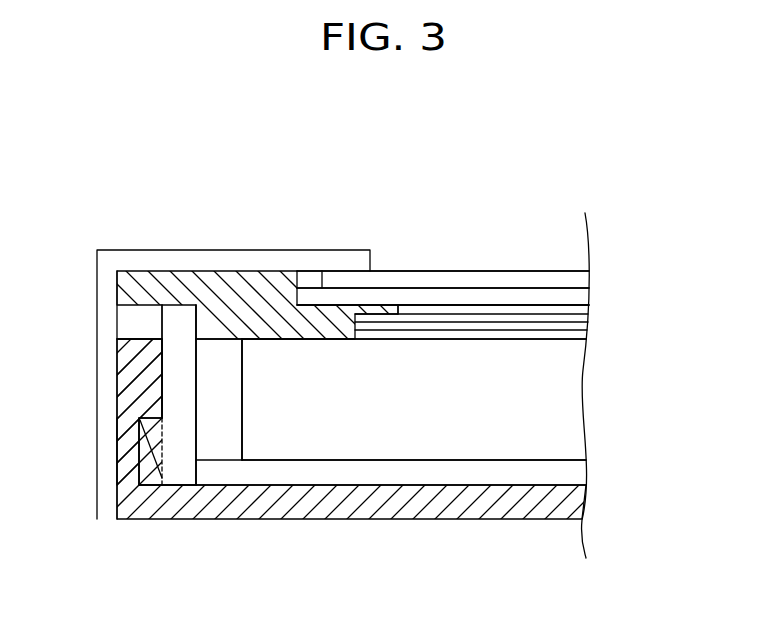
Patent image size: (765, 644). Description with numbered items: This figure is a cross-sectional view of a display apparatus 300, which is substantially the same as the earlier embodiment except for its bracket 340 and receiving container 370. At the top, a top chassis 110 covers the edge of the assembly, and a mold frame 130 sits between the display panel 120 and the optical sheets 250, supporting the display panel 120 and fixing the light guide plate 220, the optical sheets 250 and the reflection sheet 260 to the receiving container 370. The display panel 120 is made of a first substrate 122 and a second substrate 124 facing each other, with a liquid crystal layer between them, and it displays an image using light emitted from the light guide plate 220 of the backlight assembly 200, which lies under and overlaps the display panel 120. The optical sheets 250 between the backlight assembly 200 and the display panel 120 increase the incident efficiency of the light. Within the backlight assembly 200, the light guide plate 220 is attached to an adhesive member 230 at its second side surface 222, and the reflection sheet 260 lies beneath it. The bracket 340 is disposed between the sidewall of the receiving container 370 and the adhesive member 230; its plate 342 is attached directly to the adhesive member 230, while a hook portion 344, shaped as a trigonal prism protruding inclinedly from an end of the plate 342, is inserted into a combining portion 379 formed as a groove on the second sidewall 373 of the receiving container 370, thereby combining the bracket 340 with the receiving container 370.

The display apparatus 300 is at (342, 179).
The top chassis 110 is at (170, 262).
The mold frame 130 is at (240, 284).
The display panel 120 is at (517, 198).
The second substrate 124 is at (435, 275).
The first substrate 122 is at (497, 290).
The optical sheets 250 is at (592, 313).
The backlight assembly 200 is at (675, 518).
The light guide plate 220 is at (590, 402).
The second side surface 222 is at (242, 432).
The reflection sheet 260 is at (590, 469).
The adhesive member 230 is at (212, 450).
The receiving container 370 is at (388, 505).
The second sidewall 373 is at (122, 382).
The combining portion 379 is at (143, 447).
The bracket 340 is at (188, 590).
The plate 342 is at (175, 474).
The hook portion 344 is at (130, 479).